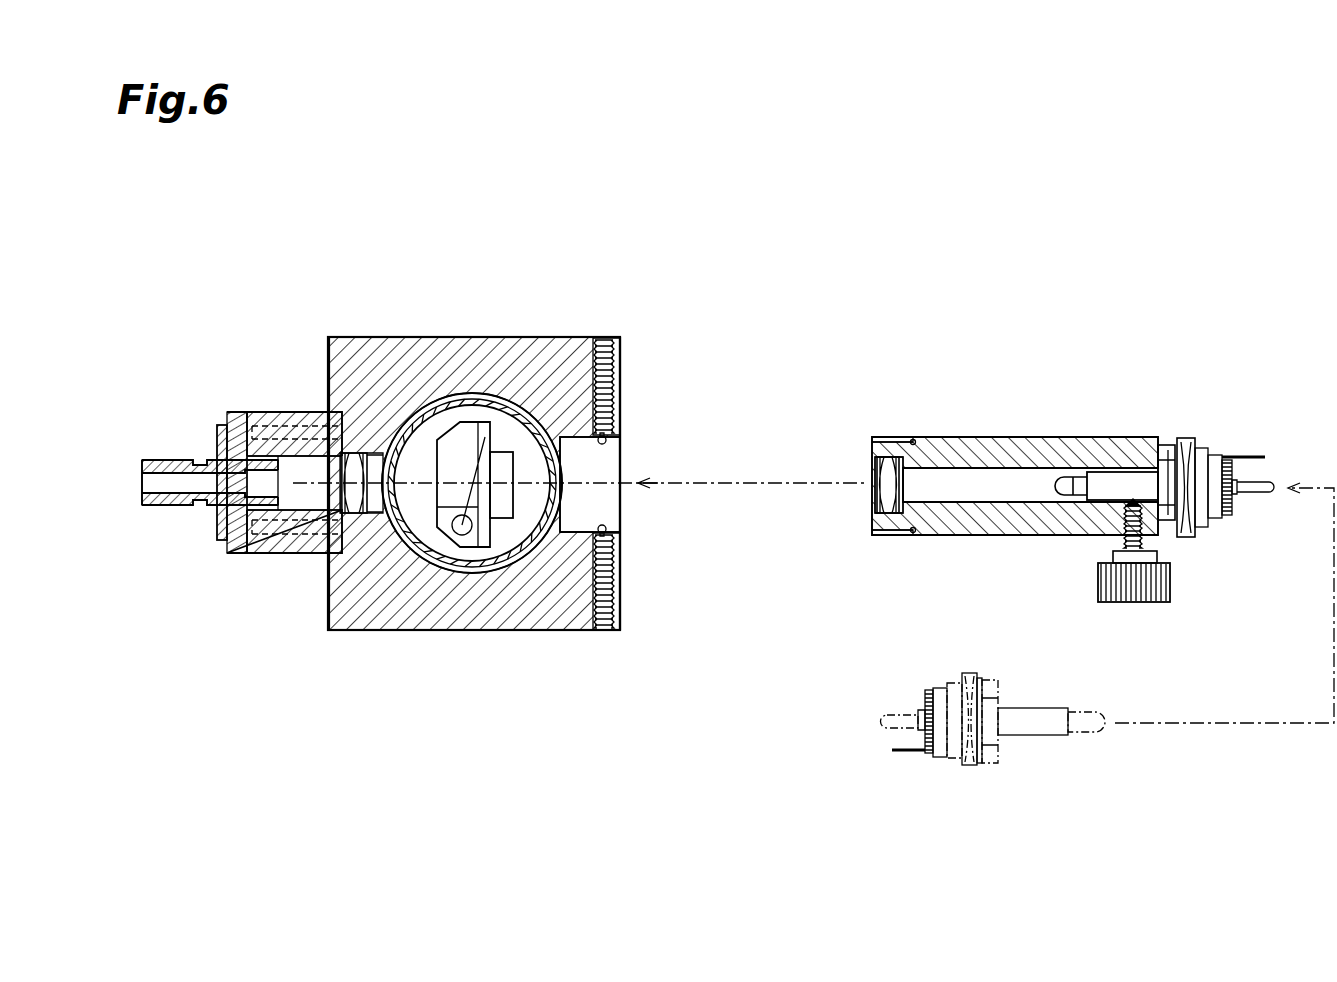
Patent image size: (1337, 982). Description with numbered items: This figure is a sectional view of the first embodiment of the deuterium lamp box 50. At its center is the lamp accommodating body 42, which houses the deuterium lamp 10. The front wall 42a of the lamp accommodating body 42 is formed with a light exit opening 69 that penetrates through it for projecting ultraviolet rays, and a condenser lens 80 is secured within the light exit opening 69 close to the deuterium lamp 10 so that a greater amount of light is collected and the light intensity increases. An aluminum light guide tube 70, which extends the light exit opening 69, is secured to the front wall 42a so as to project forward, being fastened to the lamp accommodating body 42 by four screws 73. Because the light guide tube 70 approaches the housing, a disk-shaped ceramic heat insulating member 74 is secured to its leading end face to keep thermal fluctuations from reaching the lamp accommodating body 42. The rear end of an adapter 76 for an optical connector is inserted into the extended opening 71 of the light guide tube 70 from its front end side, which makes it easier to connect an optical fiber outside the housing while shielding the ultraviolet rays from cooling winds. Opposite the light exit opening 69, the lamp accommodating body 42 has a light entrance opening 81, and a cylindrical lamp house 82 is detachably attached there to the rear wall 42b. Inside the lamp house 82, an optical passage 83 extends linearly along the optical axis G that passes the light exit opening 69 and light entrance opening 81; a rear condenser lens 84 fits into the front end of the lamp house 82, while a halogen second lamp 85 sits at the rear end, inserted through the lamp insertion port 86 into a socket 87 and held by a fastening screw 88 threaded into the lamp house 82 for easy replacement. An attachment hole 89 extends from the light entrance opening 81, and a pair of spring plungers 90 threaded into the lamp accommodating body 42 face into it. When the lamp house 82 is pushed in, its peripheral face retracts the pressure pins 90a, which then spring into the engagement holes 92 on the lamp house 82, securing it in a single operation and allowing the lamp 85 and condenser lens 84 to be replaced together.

The lamp box 50 is at (560, 285).
The lamp accommodating body 42 is at (480, 340).
The front wall 42a is at (329, 362).
The rear wall 42b is at (620, 365).
The spring plungers 90 is at (615, 405).
The pressure pins 90a is at (606, 444).
The attachment hole 89 is at (612, 498).
The light entrance opening 81 is at (578, 520).
The optical axis G is at (583, 483).
The deuterium lamp 10 is at (473, 577).
The light exit opening 69 is at (373, 502).
The condenser lens 80 is at (353, 453).
The light guide tube 70 is at (296, 412).
The extended opening 71 is at (300, 500).
The screws 73 is at (265, 426).
The heat insulating member 74 is at (240, 412).
The adapter 76 is at (156, 460).
The lamp house 82 is at (1002, 407).
The optical passage 83 is at (1005, 492).
The condenser lens 84 is at (887, 510).
The second lamp 85 is at (1080, 478).
The lamp insertion port 86 is at (1163, 480).
The socket 87 is at (1128, 480).
The fastening screw 88 is at (1117, 540).
The engagement holes 92 is at (914, 440).